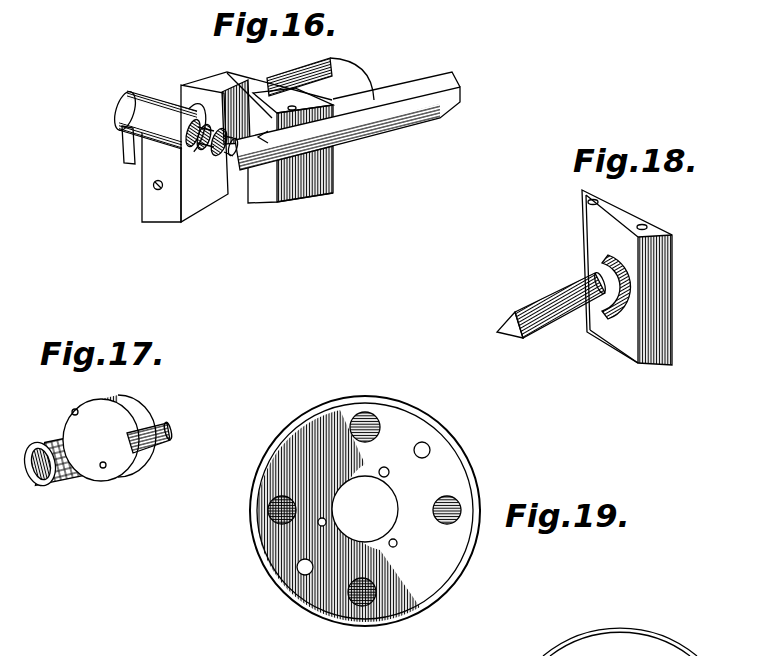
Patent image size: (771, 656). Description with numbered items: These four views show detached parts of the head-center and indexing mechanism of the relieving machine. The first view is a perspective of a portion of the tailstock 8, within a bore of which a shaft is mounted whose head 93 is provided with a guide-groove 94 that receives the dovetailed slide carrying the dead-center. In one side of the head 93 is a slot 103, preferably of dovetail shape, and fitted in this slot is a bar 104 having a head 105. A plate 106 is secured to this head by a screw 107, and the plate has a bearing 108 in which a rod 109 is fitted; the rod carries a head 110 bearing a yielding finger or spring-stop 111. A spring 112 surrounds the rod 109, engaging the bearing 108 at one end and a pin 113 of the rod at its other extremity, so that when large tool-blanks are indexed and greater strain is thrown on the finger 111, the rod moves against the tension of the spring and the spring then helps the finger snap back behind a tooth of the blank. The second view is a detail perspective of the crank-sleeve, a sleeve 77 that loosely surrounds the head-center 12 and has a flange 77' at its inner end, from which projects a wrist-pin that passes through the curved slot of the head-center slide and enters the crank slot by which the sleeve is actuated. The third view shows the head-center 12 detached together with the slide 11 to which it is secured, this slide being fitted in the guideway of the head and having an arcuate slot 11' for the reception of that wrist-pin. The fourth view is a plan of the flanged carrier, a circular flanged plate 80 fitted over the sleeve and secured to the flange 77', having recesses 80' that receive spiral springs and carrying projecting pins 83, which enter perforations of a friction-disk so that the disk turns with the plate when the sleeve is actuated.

In FIG. 16, the tailstock 8 is at (308, 72).
In FIG. 16, the head 93 is at (197, 80).
In FIG. 16, the guide-groove 94 is at (256, 103).
In FIG. 16, the slot 103 is at (262, 190).
In FIG. 16, the bar 104 is at (357, 130).
In FIG. 16, the head 105 is at (232, 160).
In FIG. 16, the plate 106 is at (178, 222).
In FIG. 16, the screw 107 is at (155, 188).
In FIG. 16, the bearing 108 is at (161, 121).
In FIG. 16, the rod 109 is at (242, 160).
In FIG. 16, the head 110 is at (143, 88).
In FIG. 16, the yielding finger or spring-stop 111 is at (127, 157).
In FIG. 16, the spring 112 is at (187, 100).
In FIG. 16, the pin 113 is at (226, 170).
In FIG. 18, the slide 11 is at (632, 271).
In FIG. 18, the arcuate slot 11' is at (667, 287).
In FIG. 18, the head-center 12 is at (545, 308).
In FIG. 17, the sleeve 77 is at (60, 448).
In FIG. 17, the flange 77' is at (117, 429).
In FIG. 19, the circular flanged plate 80 is at (365, 511).
In FIG. 19, the recesses 80' is at (361, 506).
In FIG. 19, the projecting pins 83 is at (427, 448).